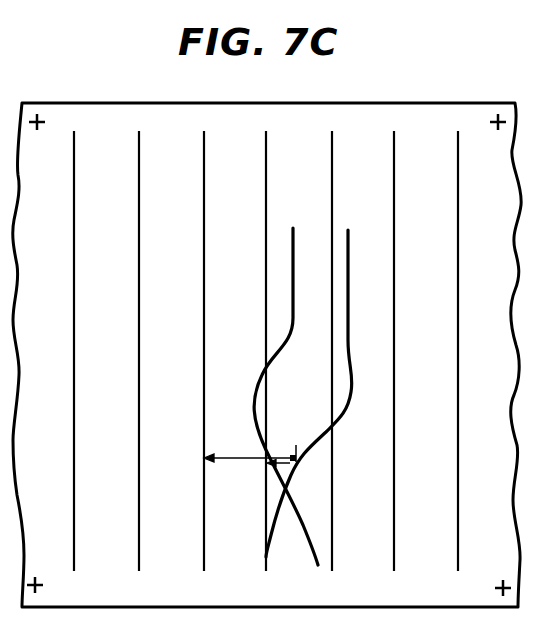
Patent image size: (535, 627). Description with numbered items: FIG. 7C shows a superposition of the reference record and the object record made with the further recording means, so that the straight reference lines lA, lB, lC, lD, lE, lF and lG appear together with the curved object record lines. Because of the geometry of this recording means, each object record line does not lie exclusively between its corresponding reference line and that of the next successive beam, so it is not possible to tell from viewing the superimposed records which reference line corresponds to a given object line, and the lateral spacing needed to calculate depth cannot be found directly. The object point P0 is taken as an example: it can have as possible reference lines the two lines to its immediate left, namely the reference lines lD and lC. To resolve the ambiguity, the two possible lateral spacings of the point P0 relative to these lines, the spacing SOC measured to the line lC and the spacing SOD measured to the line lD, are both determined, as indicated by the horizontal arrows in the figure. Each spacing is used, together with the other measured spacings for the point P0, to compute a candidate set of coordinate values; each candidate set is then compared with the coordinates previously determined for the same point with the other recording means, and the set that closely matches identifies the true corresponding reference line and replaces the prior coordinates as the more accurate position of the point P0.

The reference line lA is at (74, 571).
The reference line lB is at (139, 571).
The reference line lC is at (204, 571).
The reference line lD is at (266, 571).
The reference line lE is at (332, 571).
The reference line lF is at (394, 571).
The reference line lG is at (458, 571).
The lateral spacing relative to line lC SOC is at (230, 455).
The lateral spacing relative to line lD SOD is at (278, 468).
The object point P0 is at (299, 463).